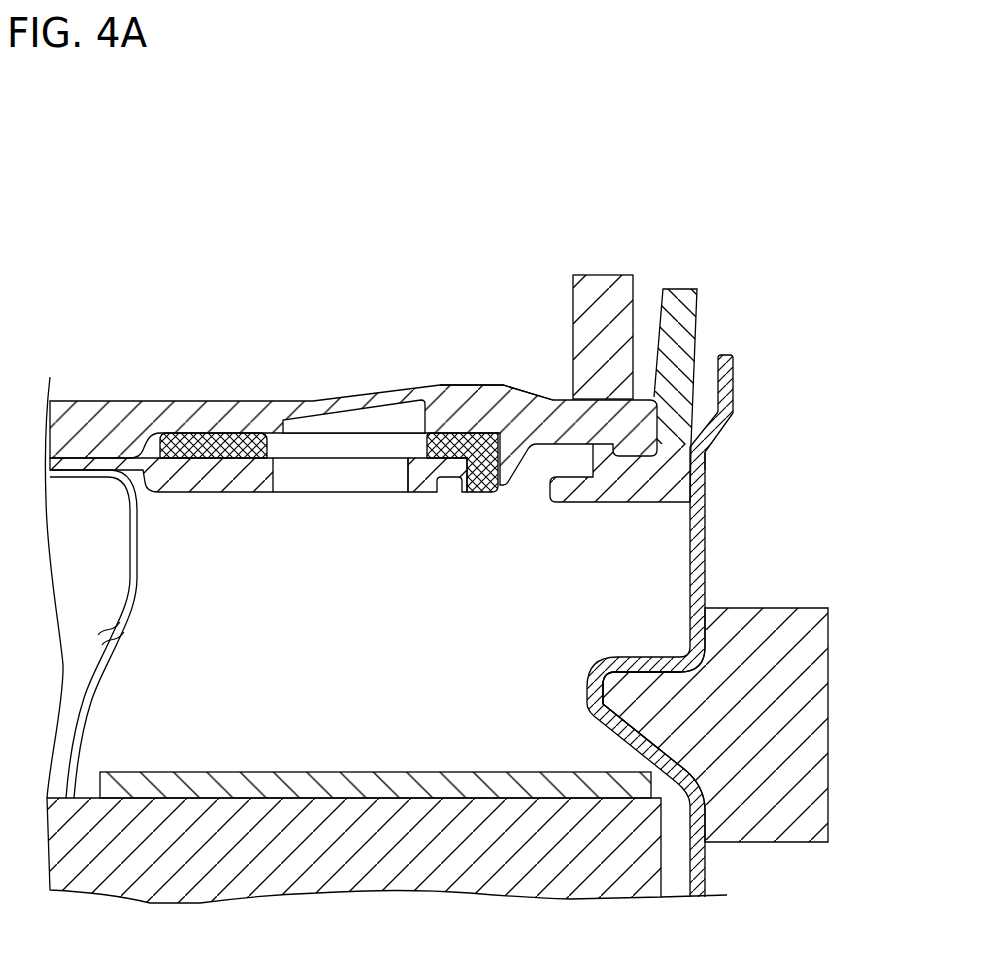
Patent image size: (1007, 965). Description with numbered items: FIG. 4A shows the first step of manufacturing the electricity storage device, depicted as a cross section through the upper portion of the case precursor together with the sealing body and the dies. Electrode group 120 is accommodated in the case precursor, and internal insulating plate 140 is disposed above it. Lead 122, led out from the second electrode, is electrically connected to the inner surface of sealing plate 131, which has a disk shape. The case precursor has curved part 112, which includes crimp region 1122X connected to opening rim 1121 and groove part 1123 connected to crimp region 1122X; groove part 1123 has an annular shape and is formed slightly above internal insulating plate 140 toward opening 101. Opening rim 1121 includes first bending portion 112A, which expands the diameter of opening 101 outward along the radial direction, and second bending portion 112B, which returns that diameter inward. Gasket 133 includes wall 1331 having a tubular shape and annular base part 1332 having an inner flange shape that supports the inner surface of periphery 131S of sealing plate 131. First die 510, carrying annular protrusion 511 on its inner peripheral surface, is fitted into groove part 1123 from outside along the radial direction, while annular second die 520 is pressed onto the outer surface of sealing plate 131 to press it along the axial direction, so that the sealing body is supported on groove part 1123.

The opening 101 is at (700, 370).
The curved part 112 is at (835, 355).
The opening rim 1121 is at (735, 385).
The first bending portion 112A is at (705, 455).
The second bending portion 112B is at (733, 420).
The crimp region 1122X is at (707, 508).
The groove part 1123 is at (567, 637).
The electrode group 120 is at (370, 815).
The lead 122 is at (133, 583).
The sealing plate 131 is at (198, 399).
The periphery 131S is at (521, 388).
The gasket 133 is at (697, 315).
The wall 1331 is at (653, 323).
The annular base part 1332 is at (612, 503).
The internal insulating plate 140 is at (227, 790).
The first die 510 is at (768, 820).
The annular protrusion 511 is at (663, 702).
The second die 520 is at (575, 318).